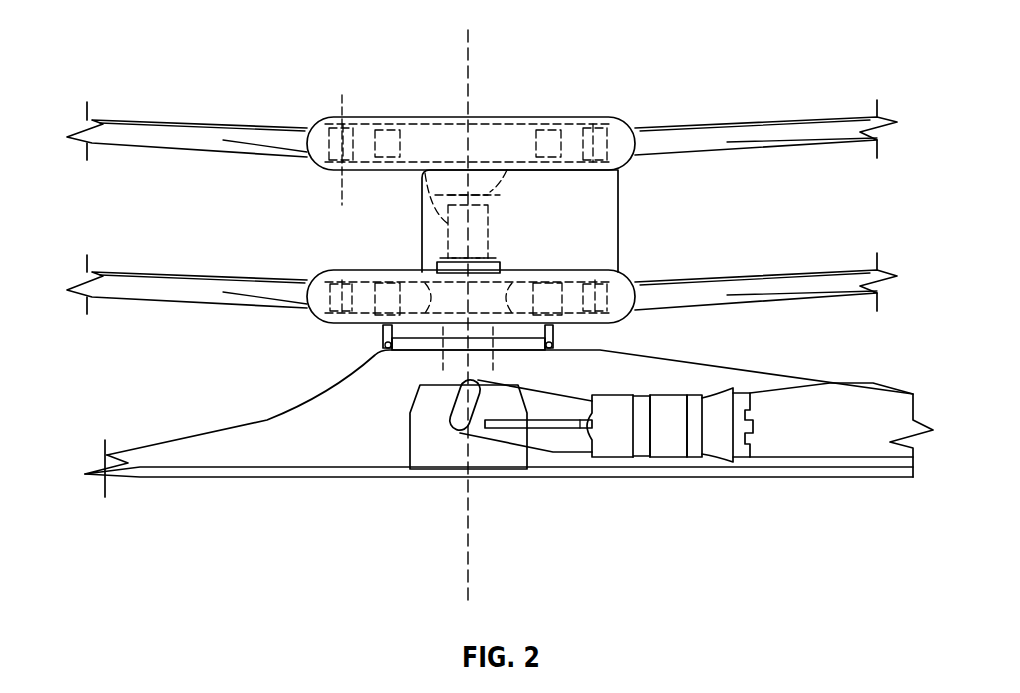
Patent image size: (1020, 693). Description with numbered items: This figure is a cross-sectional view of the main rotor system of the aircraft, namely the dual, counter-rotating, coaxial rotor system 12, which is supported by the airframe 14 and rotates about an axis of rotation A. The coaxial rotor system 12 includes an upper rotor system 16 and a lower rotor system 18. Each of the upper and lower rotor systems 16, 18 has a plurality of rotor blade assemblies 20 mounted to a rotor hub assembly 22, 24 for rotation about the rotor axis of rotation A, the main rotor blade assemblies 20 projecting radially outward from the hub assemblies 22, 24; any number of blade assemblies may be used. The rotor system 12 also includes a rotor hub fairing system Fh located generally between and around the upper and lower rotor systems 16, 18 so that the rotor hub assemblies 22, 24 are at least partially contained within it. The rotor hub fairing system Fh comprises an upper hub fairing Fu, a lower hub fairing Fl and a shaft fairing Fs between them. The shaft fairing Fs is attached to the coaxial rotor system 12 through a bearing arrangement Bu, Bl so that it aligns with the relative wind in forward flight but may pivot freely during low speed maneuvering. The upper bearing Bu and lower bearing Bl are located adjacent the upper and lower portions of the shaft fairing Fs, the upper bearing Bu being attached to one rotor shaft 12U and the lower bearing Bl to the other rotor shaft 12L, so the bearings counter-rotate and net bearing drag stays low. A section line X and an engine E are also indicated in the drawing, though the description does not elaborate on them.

The dual, counter-rotating, coaxial rotor system 12 is at (433, 269).
The rotor shaft 12U is at (452, 228).
The rotor shaft 12L is at (423, 263).
The airframe 14 is at (308, 465).
The upper rotor system 16 is at (380, 127).
The lower rotor system 18 is at (631, 264).
The rotor blade assemblies 20 is at (767, 127).
The rotor hub assembly 22 is at (492, 117).
The rotor hub assembly 24 is at (528, 340).
The axis of rotation A is at (468, 55).
The section line X is at (341, 142).
The upper bearing Bu is at (500, 200).
The lower bearing Bl is at (500, 257).
The engine E is at (610, 445).
The upper hub fairing Fu is at (314, 87).
The rotor hub fairing system Fh is at (305, 211).
The lower hub fairing Fl is at (325, 267).
The shaft fairing Fs is at (607, 218).